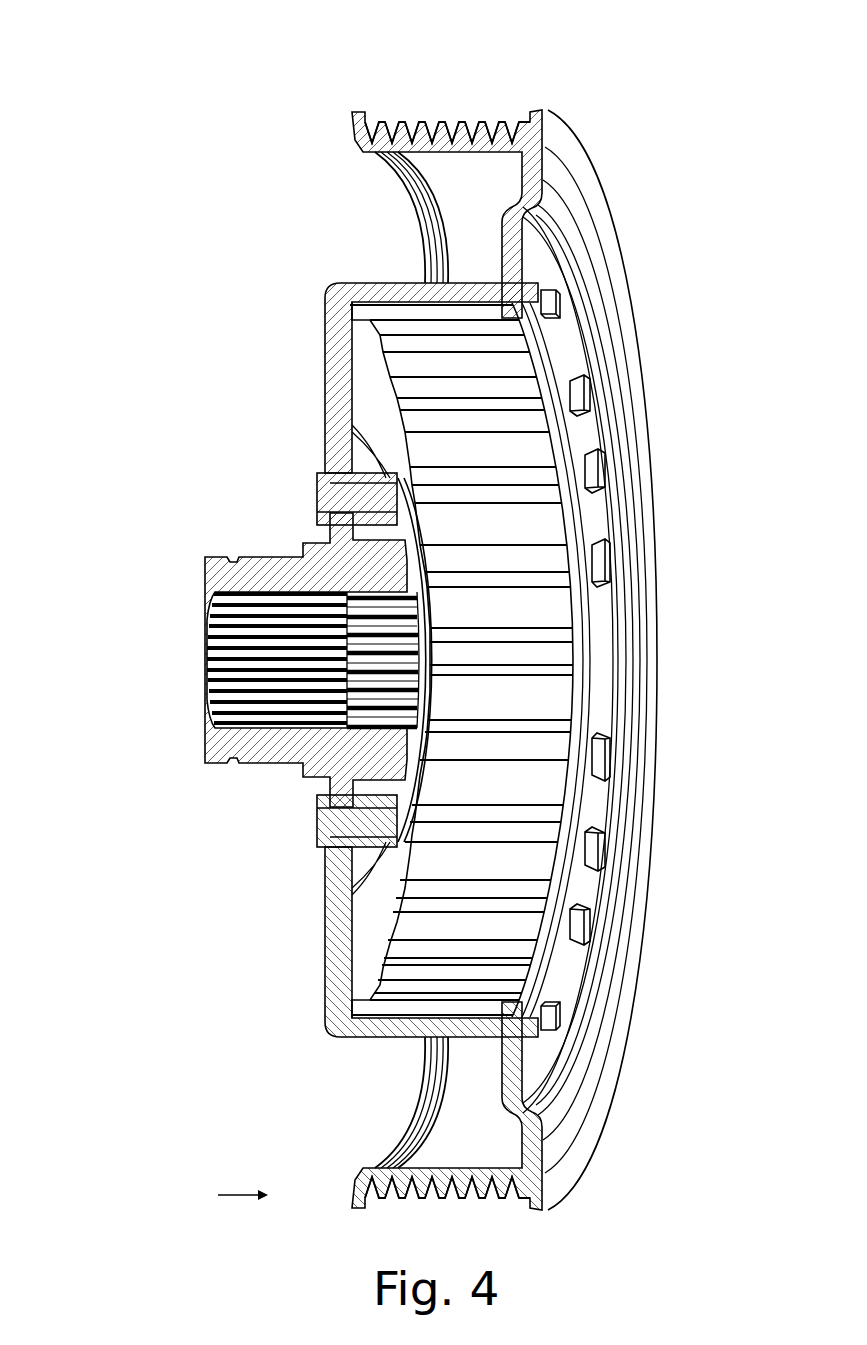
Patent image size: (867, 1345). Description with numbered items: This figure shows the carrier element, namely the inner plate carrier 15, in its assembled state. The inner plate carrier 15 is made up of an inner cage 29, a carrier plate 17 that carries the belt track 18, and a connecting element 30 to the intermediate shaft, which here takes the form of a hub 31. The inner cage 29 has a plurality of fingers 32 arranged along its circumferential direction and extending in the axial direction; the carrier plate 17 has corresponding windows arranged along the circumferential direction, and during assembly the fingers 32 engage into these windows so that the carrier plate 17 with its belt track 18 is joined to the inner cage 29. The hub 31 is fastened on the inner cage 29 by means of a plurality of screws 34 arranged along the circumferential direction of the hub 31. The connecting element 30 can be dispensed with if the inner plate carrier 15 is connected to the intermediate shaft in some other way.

The inner plate carrier 15 is at (203, 170).
The carrier plate 17 is at (573, 147).
The belt track 18 is at (490, 122).
The inner cage 29 is at (330, 352).
The connecting element 30 is at (228, 660).
The hub 31 is at (237, 578).
The fingers 32 is at (560, 306).
The screws 34 is at (333, 503).